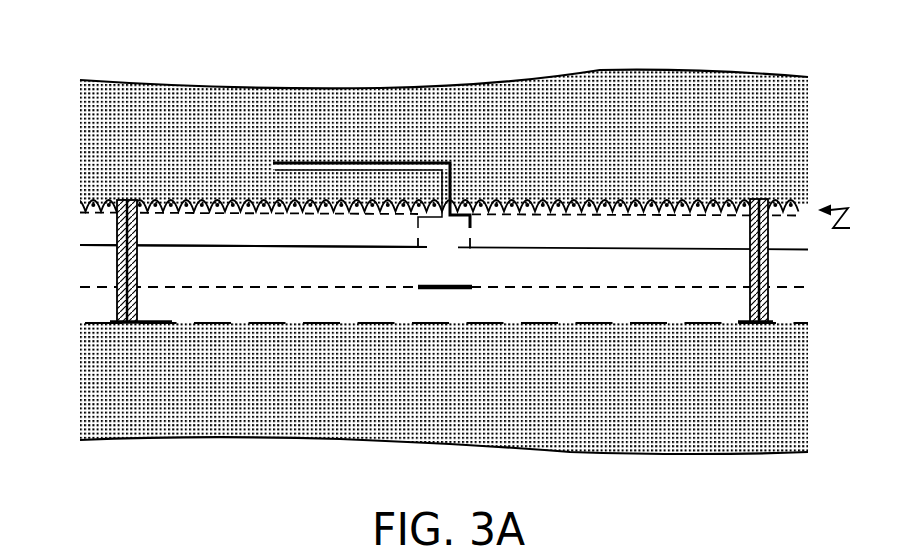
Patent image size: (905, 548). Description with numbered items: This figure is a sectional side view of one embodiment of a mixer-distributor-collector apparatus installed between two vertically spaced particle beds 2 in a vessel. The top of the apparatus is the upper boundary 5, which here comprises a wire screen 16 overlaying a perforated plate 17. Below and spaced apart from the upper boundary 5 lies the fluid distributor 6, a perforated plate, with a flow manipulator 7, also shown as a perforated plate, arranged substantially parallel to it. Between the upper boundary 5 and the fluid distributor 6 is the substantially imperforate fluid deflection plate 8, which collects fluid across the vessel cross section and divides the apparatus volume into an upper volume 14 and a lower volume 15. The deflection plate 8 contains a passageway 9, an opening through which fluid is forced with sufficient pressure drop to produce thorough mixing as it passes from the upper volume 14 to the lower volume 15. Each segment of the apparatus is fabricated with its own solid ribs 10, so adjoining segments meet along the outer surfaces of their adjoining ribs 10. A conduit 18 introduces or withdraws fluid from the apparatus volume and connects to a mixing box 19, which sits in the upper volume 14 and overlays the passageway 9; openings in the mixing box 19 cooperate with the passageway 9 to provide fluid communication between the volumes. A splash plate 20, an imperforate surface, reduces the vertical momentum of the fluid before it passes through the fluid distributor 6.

The particle bed 2 is at (672, 128).
The upper boundary 5 is at (847, 222).
The fluid distributor 6 is at (195, 287).
The flow manipulator 7 is at (690, 323).
The fluid deflection plate 8 is at (710, 252).
The passageway 9 is at (443, 247).
The ribs 10 is at (117, 272).
The upper volume 14 is at (195, 237).
The lower volume 15 is at (292, 263).
The wire screen 16 is at (791, 208).
The perforated plate 17 is at (733, 213).
The conduit 18 is at (335, 163).
The mixing box 19 is at (470, 223).
The splash plate 20 is at (472, 287).